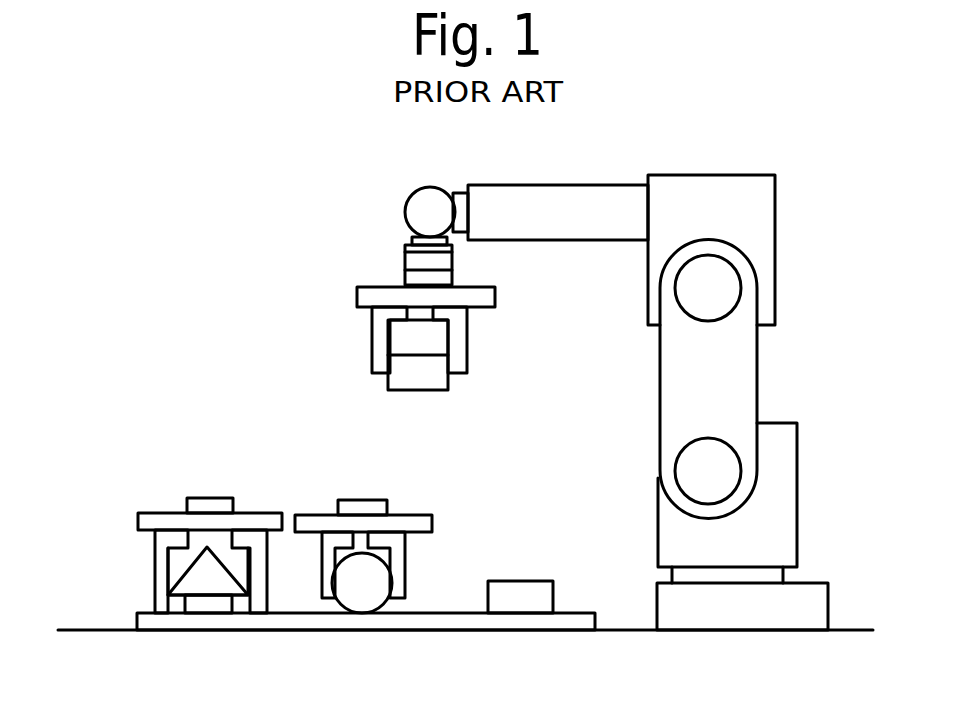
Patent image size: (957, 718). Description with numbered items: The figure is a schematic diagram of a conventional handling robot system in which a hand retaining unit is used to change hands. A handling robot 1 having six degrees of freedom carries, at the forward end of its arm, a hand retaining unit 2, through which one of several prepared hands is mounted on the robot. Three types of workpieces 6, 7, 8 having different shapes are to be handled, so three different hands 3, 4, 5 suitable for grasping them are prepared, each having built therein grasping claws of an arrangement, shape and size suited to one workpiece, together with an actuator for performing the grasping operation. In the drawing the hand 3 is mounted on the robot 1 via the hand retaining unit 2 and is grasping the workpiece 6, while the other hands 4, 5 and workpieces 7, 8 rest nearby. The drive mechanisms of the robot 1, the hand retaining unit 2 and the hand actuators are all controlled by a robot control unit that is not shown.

The handling robot 1 is at (790, 368).
The hand retaining unit 2 is at (408, 262).
The hand 3 is at (366, 298).
The hand 4 is at (157, 515).
The hand 5 is at (310, 520).
The workpiece 6 is at (443, 381).
The workpiece 7 is at (195, 590).
The workpiece 8 is at (360, 603).